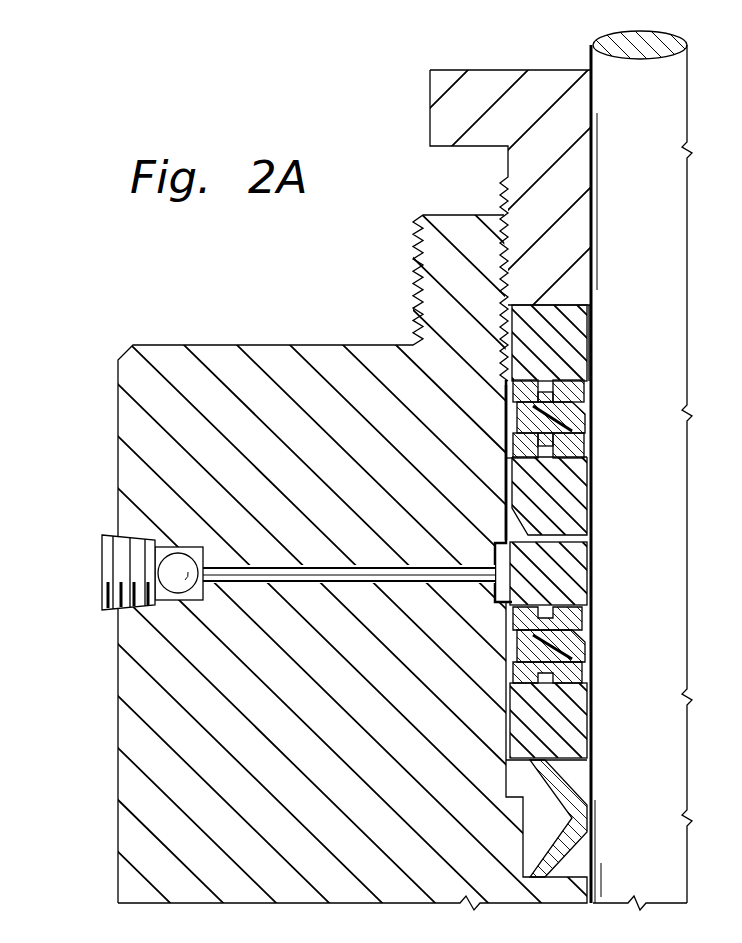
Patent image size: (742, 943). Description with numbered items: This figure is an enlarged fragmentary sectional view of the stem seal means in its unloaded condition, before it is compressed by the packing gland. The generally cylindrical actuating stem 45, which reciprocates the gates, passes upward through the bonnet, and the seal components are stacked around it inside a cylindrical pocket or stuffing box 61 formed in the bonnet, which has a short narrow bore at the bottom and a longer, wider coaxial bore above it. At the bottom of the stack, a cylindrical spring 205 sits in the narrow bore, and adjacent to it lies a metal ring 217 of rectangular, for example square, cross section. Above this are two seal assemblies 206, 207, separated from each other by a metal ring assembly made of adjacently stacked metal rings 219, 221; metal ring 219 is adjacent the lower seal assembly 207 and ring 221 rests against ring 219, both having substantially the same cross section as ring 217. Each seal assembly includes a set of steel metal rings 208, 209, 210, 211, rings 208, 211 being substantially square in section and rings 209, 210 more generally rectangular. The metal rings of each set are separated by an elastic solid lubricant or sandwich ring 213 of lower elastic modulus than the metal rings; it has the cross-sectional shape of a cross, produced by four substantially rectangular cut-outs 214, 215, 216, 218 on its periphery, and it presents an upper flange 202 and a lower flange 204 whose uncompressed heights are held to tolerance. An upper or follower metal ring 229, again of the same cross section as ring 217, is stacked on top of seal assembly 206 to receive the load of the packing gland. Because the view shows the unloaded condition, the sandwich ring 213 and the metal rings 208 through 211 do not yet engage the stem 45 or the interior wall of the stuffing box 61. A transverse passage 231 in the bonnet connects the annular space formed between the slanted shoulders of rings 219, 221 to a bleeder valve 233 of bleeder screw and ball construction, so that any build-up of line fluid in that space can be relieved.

The actuating stem 45 is at (592, 50).
The stuffing box 61 is at (500, 531).
The upper flange 202 is at (471, 509).
The lower flange 204 is at (562, 496).
The cylindrical spring 205 is at (563, 798).
The seal assembly 206 is at (503, 419).
The seal assembly 207 is at (503, 648).
The metal ring 208 is at (547, 392).
The metal ring 209 is at (596, 364).
The metal ring 210 is at (590, 448).
The metal ring 211 is at (510, 456).
The sandwich ring 213 is at (513, 443).
The rectangular cut-out 214 is at (512, 450).
The rectangular cut-out 215 is at (513, 395).
The rectangular cut-out 216 is at (593, 397).
The metal ring 217 is at (560, 728).
The rectangular cut-out 218 is at (590, 442).
The metal ring 219 is at (565, 563).
The metal ring 221 is at (570, 484).
The follower metal ring 229 is at (557, 330).
The transverse passage 231 is at (370, 568).
The bleeder valve 233 is at (93, 535).